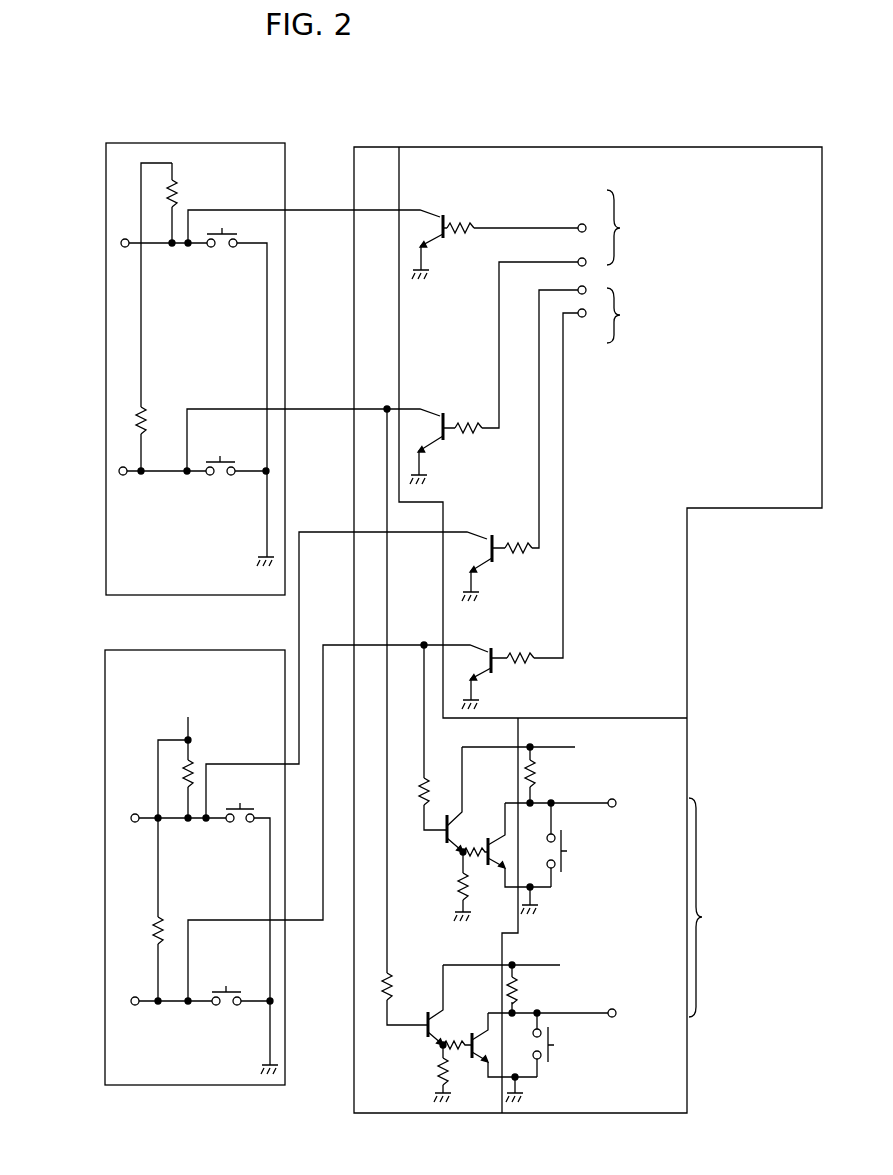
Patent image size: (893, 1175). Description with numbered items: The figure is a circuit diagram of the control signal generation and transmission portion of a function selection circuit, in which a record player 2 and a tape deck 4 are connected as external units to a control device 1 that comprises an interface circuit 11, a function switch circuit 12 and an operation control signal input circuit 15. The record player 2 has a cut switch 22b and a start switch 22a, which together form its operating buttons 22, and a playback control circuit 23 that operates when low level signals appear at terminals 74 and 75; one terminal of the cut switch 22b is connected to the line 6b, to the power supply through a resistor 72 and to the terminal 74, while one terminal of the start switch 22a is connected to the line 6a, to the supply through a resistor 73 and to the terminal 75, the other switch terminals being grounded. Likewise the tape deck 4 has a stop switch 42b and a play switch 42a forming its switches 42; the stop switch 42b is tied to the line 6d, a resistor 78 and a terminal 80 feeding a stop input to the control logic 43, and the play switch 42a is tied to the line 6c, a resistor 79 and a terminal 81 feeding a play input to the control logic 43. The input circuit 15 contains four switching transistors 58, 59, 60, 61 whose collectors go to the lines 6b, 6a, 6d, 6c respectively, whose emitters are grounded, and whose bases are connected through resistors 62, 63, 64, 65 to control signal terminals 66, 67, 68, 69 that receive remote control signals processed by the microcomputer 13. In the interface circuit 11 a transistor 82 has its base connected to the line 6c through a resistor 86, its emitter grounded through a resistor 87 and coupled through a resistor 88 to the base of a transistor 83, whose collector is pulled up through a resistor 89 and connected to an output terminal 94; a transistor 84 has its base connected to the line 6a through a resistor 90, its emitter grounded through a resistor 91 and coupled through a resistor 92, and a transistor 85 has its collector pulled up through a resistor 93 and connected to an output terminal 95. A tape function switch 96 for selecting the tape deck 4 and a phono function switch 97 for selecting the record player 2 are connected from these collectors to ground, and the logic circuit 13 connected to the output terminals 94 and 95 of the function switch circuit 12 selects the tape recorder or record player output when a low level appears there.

The control device 1 is at (437, 147).
The record player 2 is at (208, 134).
The tape deck 4 is at (185, 650).
The line 6a is at (322, 409).
The line 6b is at (330, 212).
The line 6c is at (316, 921).
The line 6d is at (299, 764).
The interface circuit 11 is at (367, 147).
The function switch circuit 12 is at (684, 1115).
The microcomputer 13 is at (706, 600).
The operation control signal input circuit 15 is at (687, 665).
The start and cut buttons 22 is at (233, 304).
The start switch 22a is at (232, 449).
The cut switch 22b is at (223, 234).
The playback control circuit 23 is at (200, 338).
The stop and play switches 42 is at (238, 818).
The play switch 42a is at (234, 978).
The stop switch 42b is at (249, 796).
The control logic 43 is at (200, 843).
The first transistor 58 is at (433, 215).
The second transistor 59 is at (431, 412).
The third transistor 60 is at (481, 537).
The fourth transistor 61 is at (479, 648).
The resistor 62 is at (463, 236).
The resistor 63 is at (470, 436).
The resistor 64 is at (514, 556).
The resistor 65 is at (514, 666).
The control signal terminal 66 is at (576, 228).
The control signal terminal 67 is at (576, 263).
The control signal terminal 68 is at (576, 293).
The control signal terminal 69 is at (580, 318).
The resistor 72 is at (175, 198).
The resistor 73 is at (150, 412).
The terminal 74 is at (123, 247).
The terminal 75 is at (119, 471).
The resistor 78 is at (192, 784).
The resistor 79 is at (164, 918).
The terminal 80 is at (134, 822).
The terminal 81 is at (131, 1002).
The switching transistor 82 is at (445, 848).
The switching transistor 83 is at (490, 866).
The switching transistor 84 is at (426, 1037).
The switching transistor 85 is at (486, 1065).
The resistor 86 is at (420, 798).
The resistor 87 is at (455, 886).
The resistor 88 is at (468, 836).
The resistor 89 is at (540, 770).
The resistor 90 is at (380, 990).
The resistor 91 is at (437, 1066).
The resistor 92 is at (458, 1038).
The resistor 93 is at (516, 976).
The output terminal 94 is at (615, 807).
The output terminal 95 is at (612, 1009).
The tape function switch 96 is at (575, 834).
The phono function switch 97 is at (552, 1050).